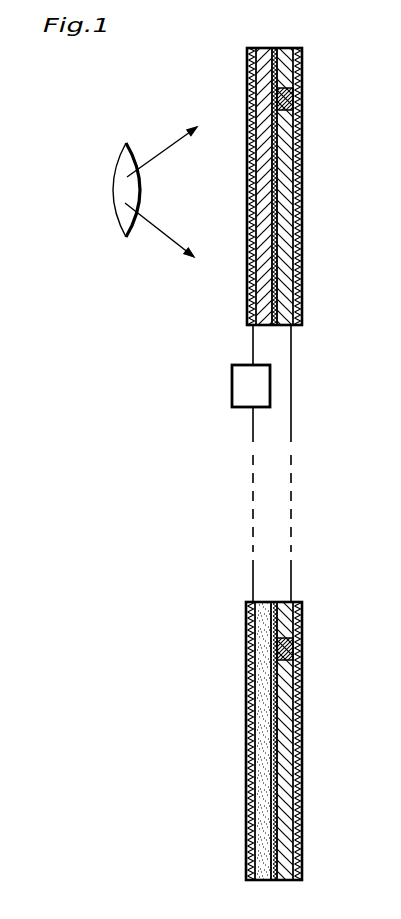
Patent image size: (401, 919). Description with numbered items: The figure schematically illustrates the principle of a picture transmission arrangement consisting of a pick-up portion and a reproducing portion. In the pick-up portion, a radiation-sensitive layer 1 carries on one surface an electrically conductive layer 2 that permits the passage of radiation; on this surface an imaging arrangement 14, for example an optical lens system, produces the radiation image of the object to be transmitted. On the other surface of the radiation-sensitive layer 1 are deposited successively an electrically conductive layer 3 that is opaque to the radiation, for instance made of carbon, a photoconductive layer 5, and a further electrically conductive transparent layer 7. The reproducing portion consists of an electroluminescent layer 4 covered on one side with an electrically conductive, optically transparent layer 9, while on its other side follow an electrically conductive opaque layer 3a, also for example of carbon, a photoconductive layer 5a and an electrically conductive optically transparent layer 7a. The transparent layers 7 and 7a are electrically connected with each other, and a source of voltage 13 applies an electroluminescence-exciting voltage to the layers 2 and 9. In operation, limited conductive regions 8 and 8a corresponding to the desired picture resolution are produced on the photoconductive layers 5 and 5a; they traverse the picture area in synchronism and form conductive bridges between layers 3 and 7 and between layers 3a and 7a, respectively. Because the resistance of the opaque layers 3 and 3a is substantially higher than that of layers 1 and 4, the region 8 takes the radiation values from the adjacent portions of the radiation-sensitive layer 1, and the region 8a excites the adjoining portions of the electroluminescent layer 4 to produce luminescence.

The radiation-sensitive layer 1 is at (263, 84).
The electrically conductive layer 2 is at (250, 295).
The electrically conductive layer opaque to the radiation 3 is at (275, 325).
The electrically conductive opaque layer 3a is at (276, 602).
The electroluminescent layer 4 is at (268, 793).
The photoconductive layer 5 is at (285, 210).
The photoconductive layer 5a is at (285, 767).
The electrically conductive transparent layer 7 is at (302, 55).
The electrically conductive optically transparent layer 7a is at (302, 614).
The limited conductive region 8 is at (293, 98).
The limited conductive region 8a is at (293, 653).
The electrically conductive, optically transparent layer 9 is at (250, 661).
The source of voltage 13 is at (250, 382).
The imaging arrangement 14 is at (112, 182).